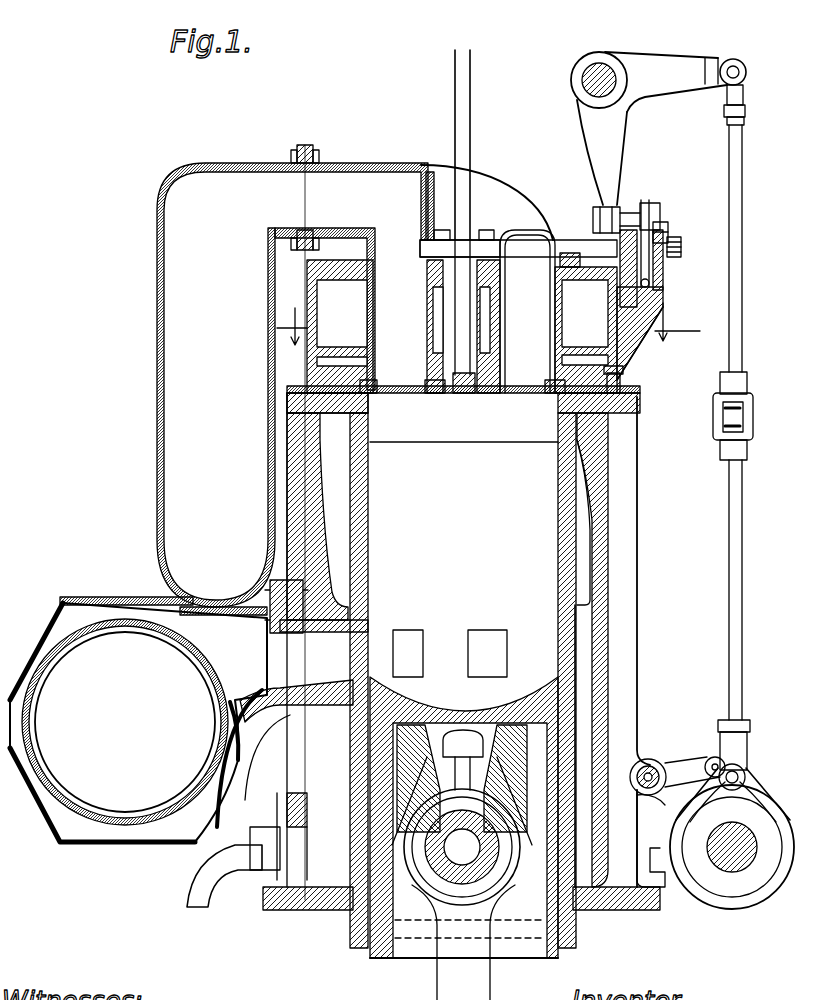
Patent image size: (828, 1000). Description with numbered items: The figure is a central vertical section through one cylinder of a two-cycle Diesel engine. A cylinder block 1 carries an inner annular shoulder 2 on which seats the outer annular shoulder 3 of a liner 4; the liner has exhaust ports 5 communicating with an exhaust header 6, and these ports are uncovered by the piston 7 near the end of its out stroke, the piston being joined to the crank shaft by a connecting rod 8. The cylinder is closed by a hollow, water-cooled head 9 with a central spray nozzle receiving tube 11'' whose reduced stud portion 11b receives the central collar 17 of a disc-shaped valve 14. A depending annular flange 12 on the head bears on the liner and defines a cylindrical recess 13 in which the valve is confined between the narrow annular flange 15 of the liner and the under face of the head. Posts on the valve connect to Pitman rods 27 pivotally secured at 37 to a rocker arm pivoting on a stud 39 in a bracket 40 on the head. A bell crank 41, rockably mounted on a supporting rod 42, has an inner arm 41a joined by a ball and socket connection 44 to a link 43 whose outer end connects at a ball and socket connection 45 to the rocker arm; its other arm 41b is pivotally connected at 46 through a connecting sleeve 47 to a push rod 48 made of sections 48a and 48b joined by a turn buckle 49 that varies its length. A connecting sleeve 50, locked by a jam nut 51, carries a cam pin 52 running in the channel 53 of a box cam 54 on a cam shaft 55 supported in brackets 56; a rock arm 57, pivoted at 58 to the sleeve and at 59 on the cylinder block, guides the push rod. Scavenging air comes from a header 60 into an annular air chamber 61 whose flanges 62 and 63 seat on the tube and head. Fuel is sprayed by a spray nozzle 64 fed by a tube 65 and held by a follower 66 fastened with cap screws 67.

The cylinder block 1 is at (620, 560).
The inner annular shoulder 2 is at (620, 450).
The outer annular shoulder 3 is at (640, 403).
The liner 4 is at (580, 540).
The exhaust ports 5 is at (375, 640).
The exhaust header 6 is at (78, 800).
The piston 7 is at (370, 925).
The connecting rod 8 is at (437, 985).
The head 9 is at (650, 278).
The spray nozzle receiving tube 11'' is at (527, 311).
The reduced stud portion 11b is at (480, 400).
The depending annular flange 12 is at (622, 388).
The cylindrical recess 13 is at (624, 372).
The valve 14 is at (300, 391).
The annular flange 15 is at (315, 410).
The central collar 17 is at (455, 405).
The Pitman rod 27 is at (620, 242).
The pivot connection 37 is at (681, 245).
The stud 39 is at (668, 228).
The bracket 40 is at (634, 342).
The bell crank 41 is at (577, 137).
The inner arm 41a is at (600, 157).
The outer arm 41b is at (650, 56).
The supporting rod 42 is at (598, 80).
The link 43 is at (644, 200).
The ball and socket connection 44 is at (598, 212).
The ball and socket connection 45 is at (656, 210).
The pivotal connection 46 is at (733, 62).
The connecting sleeve 47 is at (745, 96).
The push rod 48 is at (742, 292).
The push rod section 48a is at (742, 190).
The push rod section 48b is at (742, 556).
The turn buckle 49 is at (748, 395).
The connecting sleeve 50 is at (747, 745).
The jam nut 51 is at (746, 720).
The cam pin 52 is at (745, 775).
The channel 53 is at (728, 905).
The box cam 54 is at (715, 905).
The cam shaft 55 is at (723, 866).
The brackets 56 is at (650, 862).
The rock arm 57 is at (678, 760).
The pivotal connection 58 is at (714, 757).
The pivot mounting 59 is at (650, 768).
The header 60 is at (163, 505).
The annular air chamber 61 is at (488, 230).
The flange 62 is at (420, 249).
The flange 63 is at (358, 280).
The spray nozzle 64 is at (463, 395).
The tube 65 is at (455, 100).
The follower 66 is at (427, 240).
The cap screws 67 is at (485, 232).